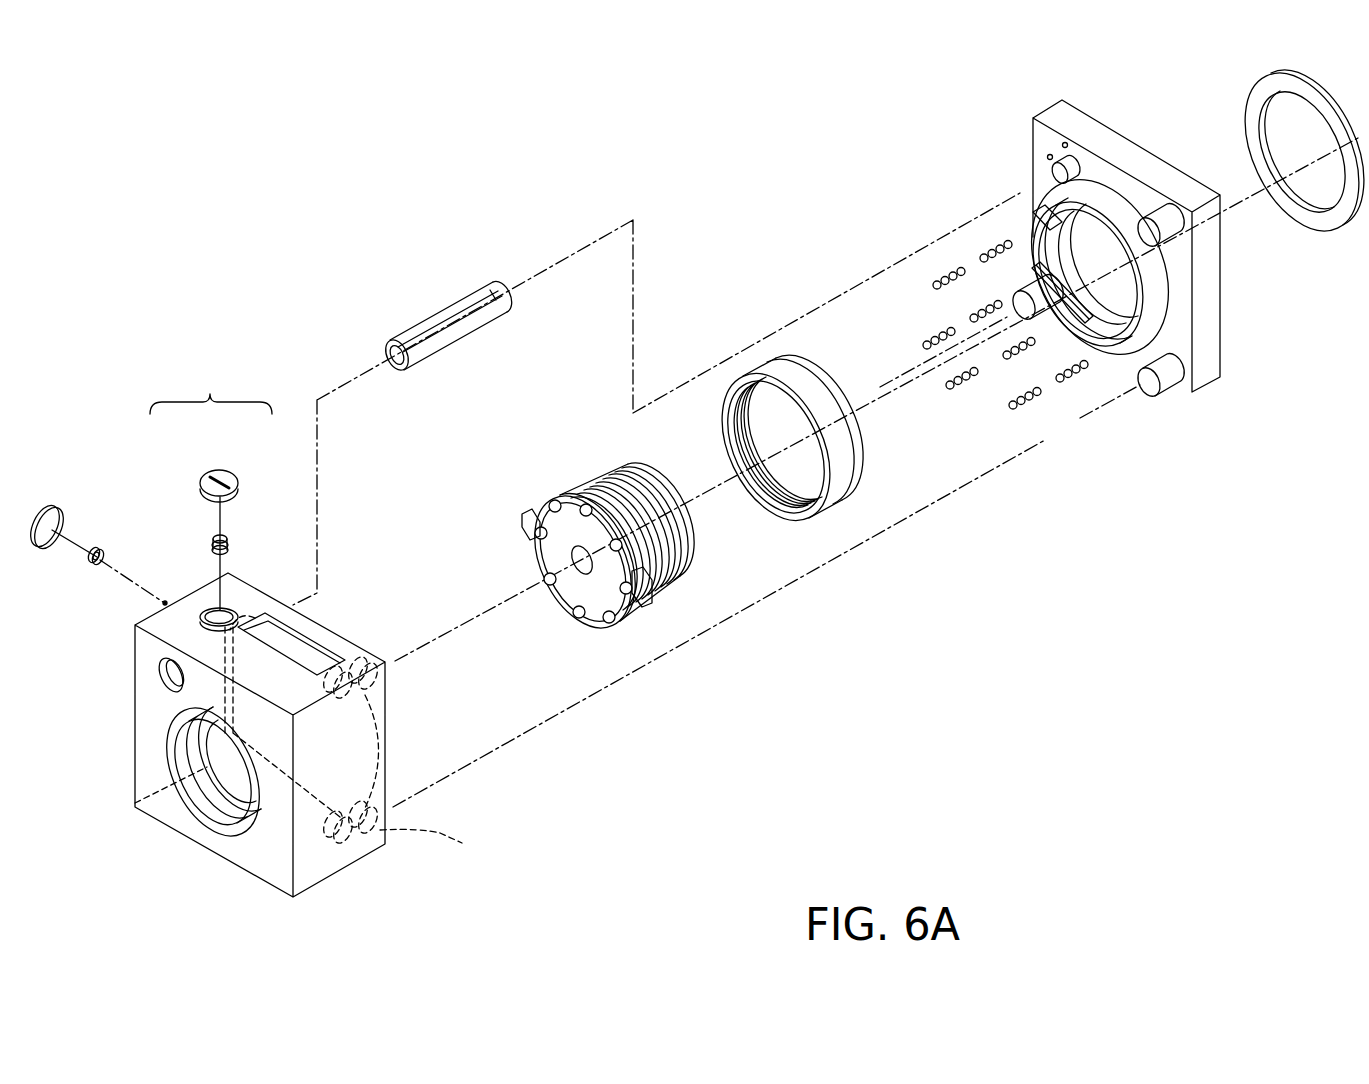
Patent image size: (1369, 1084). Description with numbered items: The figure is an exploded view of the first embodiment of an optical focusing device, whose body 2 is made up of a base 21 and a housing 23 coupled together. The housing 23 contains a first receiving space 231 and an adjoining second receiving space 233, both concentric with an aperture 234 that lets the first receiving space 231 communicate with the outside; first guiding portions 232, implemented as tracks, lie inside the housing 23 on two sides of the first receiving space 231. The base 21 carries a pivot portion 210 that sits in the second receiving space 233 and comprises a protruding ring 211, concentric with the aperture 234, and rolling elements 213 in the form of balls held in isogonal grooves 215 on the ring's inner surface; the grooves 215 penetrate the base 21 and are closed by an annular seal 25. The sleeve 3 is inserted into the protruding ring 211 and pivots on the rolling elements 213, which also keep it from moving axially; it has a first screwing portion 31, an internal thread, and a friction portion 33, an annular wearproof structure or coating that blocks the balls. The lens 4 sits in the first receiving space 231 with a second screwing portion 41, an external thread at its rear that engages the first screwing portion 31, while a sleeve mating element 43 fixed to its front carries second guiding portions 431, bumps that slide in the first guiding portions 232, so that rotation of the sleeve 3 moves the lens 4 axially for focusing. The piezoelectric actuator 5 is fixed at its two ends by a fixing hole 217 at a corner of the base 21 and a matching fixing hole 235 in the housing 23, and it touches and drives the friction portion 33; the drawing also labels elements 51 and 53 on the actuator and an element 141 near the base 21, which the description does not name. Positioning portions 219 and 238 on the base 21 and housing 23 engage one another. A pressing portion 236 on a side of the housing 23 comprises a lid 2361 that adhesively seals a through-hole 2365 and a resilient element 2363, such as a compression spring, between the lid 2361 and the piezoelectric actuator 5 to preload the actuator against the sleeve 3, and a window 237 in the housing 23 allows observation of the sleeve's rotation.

The body 2 is at (1203, 658).
The base 21 is at (997, 363).
The pivot portion 210 is at (828, 147).
The protruding ring 211 is at (1087, 197).
The rolling elements 213 is at (933, 285).
The grooves 215 is at (1043, 240).
The fixing hole 217 is at (1075, 167).
The positioning portion 219 is at (1167, 395).
The screws 141 is at (1030, 407).
The annular seal 25 is at (1325, 222).
The sleeve 3 is at (833, 425).
The first screwing portion 31 is at (766, 500).
The friction portion 33 is at (800, 368).
The lens 4 is at (592, 578).
The second screwing portion 41 is at (682, 593).
The sleeve mating element 43 is at (603, 623).
The second guiding portions 431 is at (648, 607).
The piezoelectric actuator 5 is at (431, 284).
The pin body 51 is at (445, 343).
The flat groove 53 is at (398, 333).
The housing 23 is at (265, 792).
The first receiving space 231 is at (247, 797).
The first guiding portions 232 is at (190, 740).
The second receiving space 233 is at (247, 800).
The aperture 234 is at (245, 780).
The fixing hole 235 is at (163, 678).
The pressing portion 236 is at (207, 489).
The lid 2361 is at (205, 470).
The resilient element 2363 is at (228, 540).
The through-hole 2365 is at (218, 612).
The window 237 is at (310, 653).
The positioning portion 238 is at (414, 759).